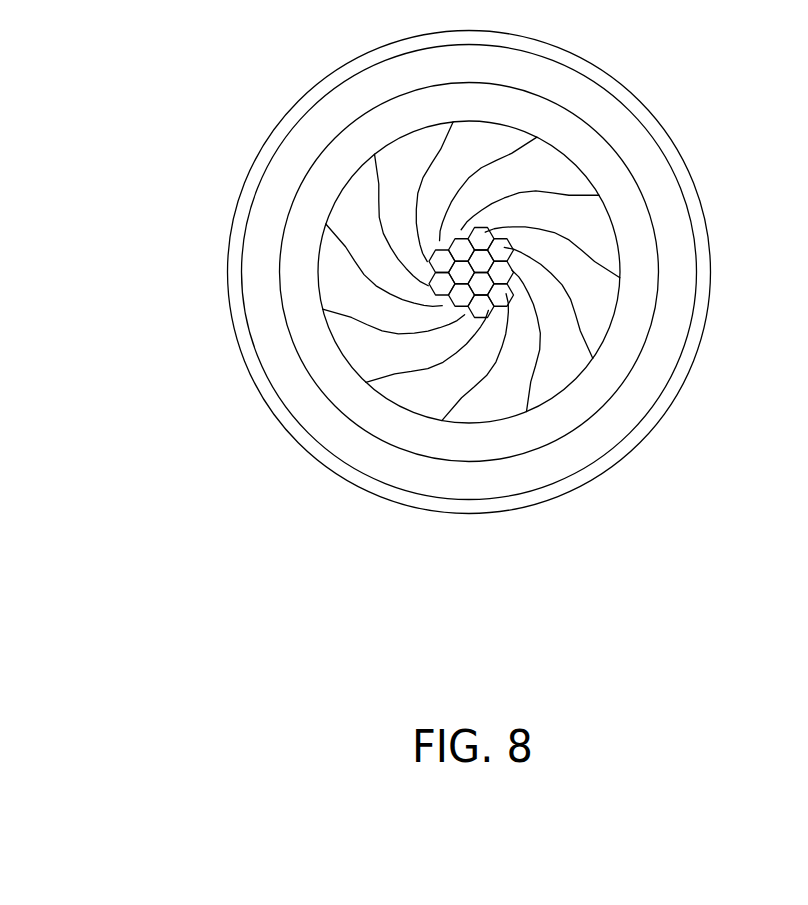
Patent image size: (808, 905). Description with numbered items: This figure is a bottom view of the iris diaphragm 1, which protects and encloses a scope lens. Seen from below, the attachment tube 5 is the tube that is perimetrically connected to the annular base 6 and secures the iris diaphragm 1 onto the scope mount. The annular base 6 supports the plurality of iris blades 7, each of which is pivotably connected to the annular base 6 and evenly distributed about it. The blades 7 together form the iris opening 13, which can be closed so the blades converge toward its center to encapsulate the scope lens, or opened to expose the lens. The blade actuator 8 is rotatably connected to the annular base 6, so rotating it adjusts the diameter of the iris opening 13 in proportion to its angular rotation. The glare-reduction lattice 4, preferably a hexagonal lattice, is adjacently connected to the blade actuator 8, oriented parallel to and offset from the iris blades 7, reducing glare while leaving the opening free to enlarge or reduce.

The iris diaphragm 1 is at (186, 112).
The glare-reduction lattice 4 is at (508, 284).
The attachment tube 5 is at (636, 353).
The annular base 6 is at (670, 240).
The iris blades 7 is at (358, 189).
The blade actuator 8 is at (640, 105).
The iris opening 13 is at (488, 246).